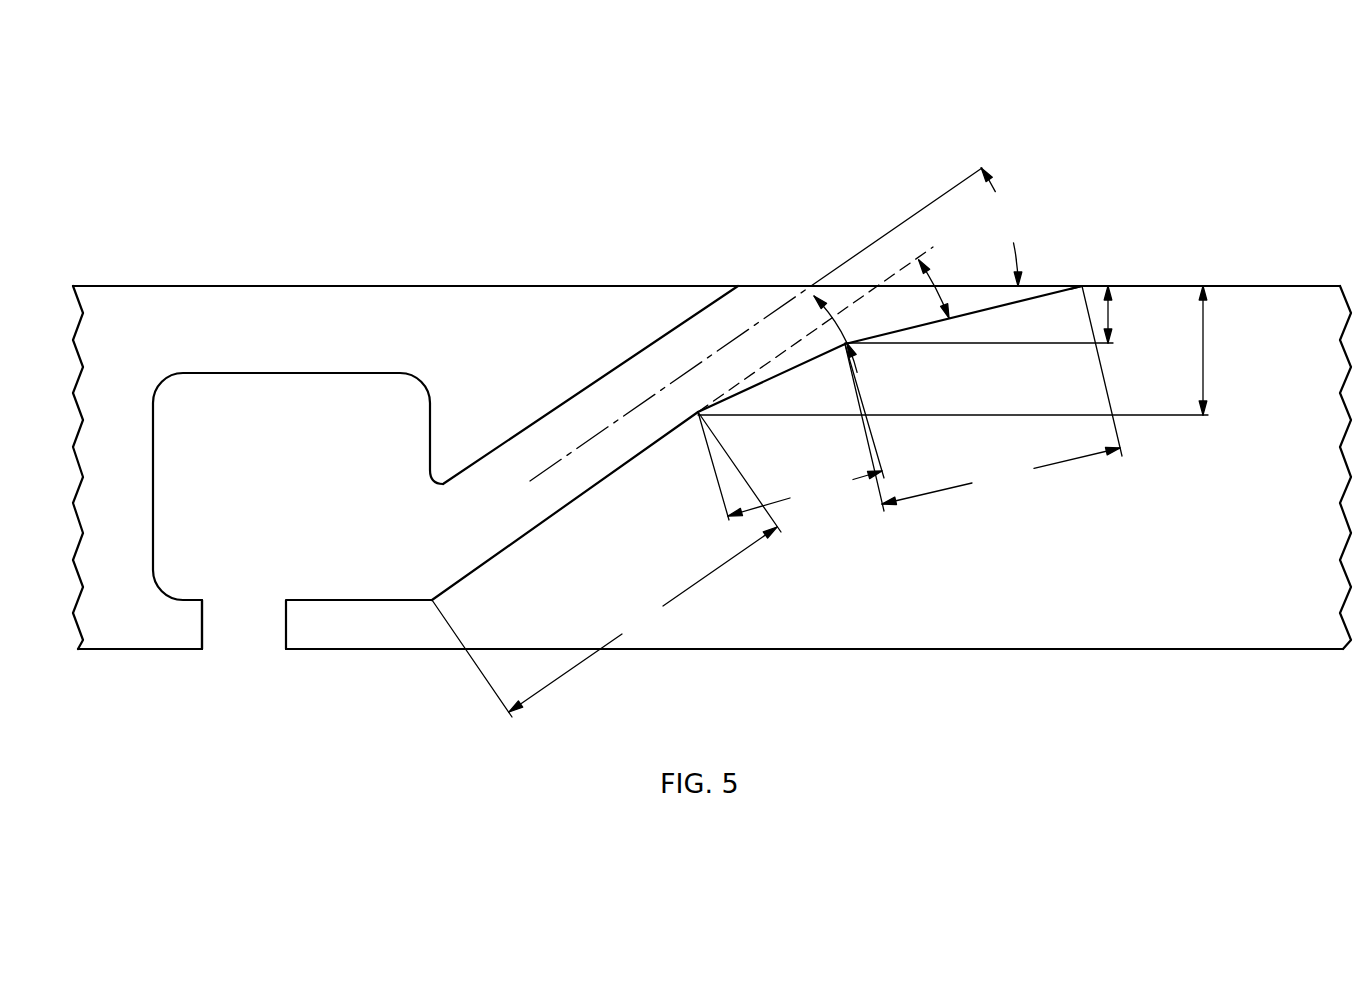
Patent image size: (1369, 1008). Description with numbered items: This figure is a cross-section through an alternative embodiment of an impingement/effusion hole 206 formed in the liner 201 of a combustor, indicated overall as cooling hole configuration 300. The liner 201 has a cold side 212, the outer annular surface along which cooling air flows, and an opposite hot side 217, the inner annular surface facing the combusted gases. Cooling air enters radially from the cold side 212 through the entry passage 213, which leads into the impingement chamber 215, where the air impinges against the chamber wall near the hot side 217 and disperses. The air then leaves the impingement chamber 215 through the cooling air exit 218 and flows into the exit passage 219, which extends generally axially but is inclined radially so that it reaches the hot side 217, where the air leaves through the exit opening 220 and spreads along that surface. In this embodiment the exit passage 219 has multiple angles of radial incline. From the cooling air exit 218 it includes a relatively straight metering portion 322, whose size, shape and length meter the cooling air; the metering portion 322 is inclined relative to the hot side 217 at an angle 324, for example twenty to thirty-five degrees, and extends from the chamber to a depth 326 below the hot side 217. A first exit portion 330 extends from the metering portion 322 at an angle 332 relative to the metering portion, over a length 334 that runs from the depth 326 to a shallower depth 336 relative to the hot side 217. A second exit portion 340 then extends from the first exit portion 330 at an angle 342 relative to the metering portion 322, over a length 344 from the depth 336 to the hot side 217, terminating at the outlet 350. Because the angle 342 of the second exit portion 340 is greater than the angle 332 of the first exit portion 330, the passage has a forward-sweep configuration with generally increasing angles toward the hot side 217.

The liner 201 is at (137, 560).
The impingement/effusion hole 206 is at (297, 711).
The cold side 212 is at (137, 653).
The entry passage 213 is at (250, 632).
The impingement chamber 215 is at (313, 425).
The hot side 217 is at (314, 285).
The cooling air exit 218 is at (590, 400).
The exit passage 219 is at (565, 458).
The exit opening 220 is at (756, 324).
The cooling hole configuration 300 is at (706, 182).
The metering portion 322 is at (606, 564).
The angle 324 is at (1007, 227).
The depth 326 is at (1203, 352).
The first exit portion 330 is at (762, 380).
The angle 332 is at (837, 332).
The length 334 is at (791, 432).
The depth 336 is at (1108, 317).
The second exit portion 340 is at (987, 312).
The angle 342 is at (930, 277).
The length 344 is at (983, 398).
The outlet 350 is at (1083, 286).